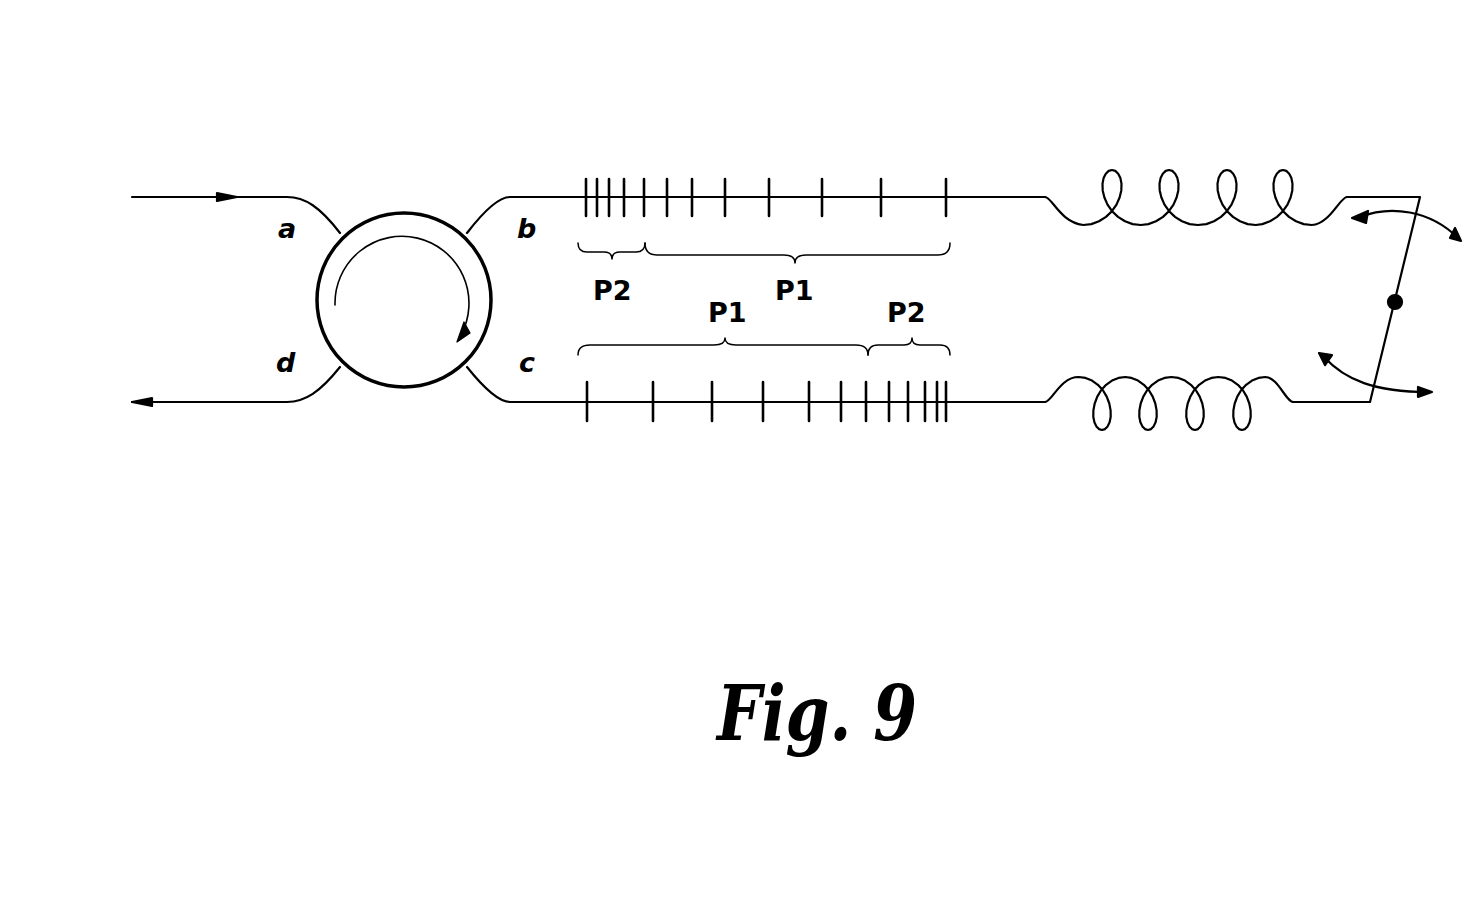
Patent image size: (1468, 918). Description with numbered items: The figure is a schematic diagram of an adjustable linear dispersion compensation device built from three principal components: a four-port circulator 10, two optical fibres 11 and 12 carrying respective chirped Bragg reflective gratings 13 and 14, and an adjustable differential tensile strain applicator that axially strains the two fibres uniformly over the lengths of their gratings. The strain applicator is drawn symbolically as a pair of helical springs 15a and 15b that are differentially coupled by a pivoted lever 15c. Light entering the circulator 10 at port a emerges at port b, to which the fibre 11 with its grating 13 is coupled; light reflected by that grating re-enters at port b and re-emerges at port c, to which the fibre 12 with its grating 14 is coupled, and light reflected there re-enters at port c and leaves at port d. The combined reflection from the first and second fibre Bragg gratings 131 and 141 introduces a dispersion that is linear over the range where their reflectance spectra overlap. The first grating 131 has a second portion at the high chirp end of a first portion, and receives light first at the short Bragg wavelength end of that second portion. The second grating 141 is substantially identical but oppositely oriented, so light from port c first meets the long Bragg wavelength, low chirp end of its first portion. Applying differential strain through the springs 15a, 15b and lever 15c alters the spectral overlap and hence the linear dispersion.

The four-port circulator 10 is at (411, 250).
The optical fibre 11 is at (975, 197).
The optical fibre 12 is at (1016, 405).
The chirped Bragg reflective grating 13 is at (692, 182).
The first fibre Bragg grating 131 is at (640, 160).
The chirped Bragg reflective grating 14 is at (838, 412).
The second fibre Bragg grating 141 is at (870, 458).
The helical spring 15a is at (1168, 170).
The helical spring 15b is at (1155, 423).
The pivoted lever 15c is at (1385, 333).